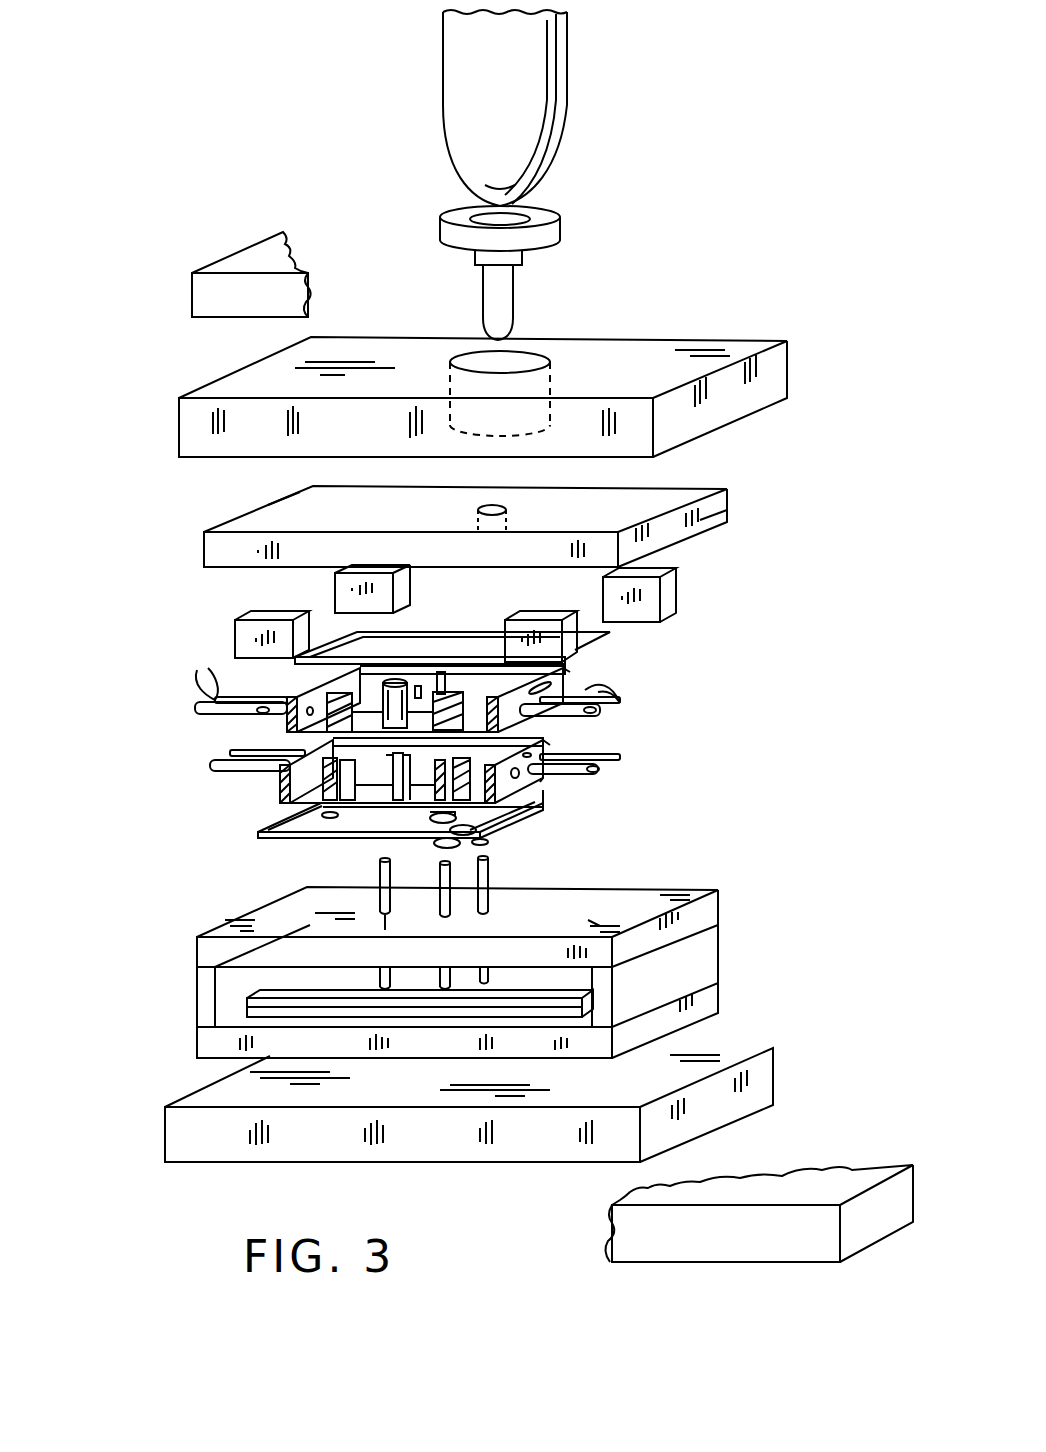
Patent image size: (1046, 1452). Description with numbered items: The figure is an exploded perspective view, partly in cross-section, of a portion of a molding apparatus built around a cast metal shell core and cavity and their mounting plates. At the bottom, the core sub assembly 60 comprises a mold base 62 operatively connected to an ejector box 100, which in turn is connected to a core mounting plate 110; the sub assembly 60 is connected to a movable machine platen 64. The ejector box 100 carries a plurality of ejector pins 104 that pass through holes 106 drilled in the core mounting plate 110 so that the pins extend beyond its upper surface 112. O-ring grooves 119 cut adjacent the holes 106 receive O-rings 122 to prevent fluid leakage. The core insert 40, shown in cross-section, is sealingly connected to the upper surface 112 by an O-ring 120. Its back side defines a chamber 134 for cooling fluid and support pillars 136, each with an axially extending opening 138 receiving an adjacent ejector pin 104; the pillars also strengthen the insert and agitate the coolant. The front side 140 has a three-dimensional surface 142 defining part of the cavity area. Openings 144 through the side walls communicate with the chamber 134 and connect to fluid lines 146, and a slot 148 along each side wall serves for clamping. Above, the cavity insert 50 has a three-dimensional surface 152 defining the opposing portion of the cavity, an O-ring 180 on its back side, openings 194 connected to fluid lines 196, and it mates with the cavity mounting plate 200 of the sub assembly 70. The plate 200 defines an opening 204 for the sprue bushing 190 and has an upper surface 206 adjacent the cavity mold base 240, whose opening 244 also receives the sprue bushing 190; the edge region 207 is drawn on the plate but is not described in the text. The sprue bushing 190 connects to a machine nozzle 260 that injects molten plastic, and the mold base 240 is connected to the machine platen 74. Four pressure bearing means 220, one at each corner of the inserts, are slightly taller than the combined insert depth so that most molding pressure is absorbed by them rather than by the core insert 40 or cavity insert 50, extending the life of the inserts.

The machine nozzle 260 is at (574, 104).
The sprue bushing 190 is at (562, 222).
The machine platen 74 is at (234, 252).
The sub assembly 70 is at (155, 325).
The cavity mold base 240 is at (178, 423).
The opening 244 is at (552, 368).
The cavity mounting plate 200 is at (203, 550).
The upper surface 206 is at (282, 522).
The opening 204 is at (478, 509).
The side edge 207 is at (720, 527).
The pressure bearing means 220 is at (680, 573).
The O-ring 180 is at (418, 648).
The openings 194 is at (575, 668).
The fluid lines 196 is at (197, 670).
The cavity insert 50 is at (302, 683).
The three-dimensional surface 152 is at (280, 720).
The three-dimensional surface 142 is at (500, 738).
The front side 140 is at (560, 748).
The axially extending opening 138 is at (307, 746).
The openings 144 is at (620, 757).
The fluid lines 146 is at (213, 766).
The core insert 40 is at (283, 778).
The support pillars 136 is at (260, 827).
The slot 148 is at (540, 782).
The chamber 134 is at (542, 793).
The O-ring 120 is at (257, 837).
The O-rings 122 is at (458, 855).
The ejector pins 104 is at (378, 876).
The holes 106 is at (490, 912).
The upper surface 112 is at (600, 908).
The core mounting plate 110 is at (723, 900).
The O-ring grooves 119 is at (392, 912).
The ejector box 100 is at (725, 988).
The core sub assembly 60 is at (188, 918).
The mold base 62 is at (469, 1105).
The movable machine platen 64 is at (788, 1196).